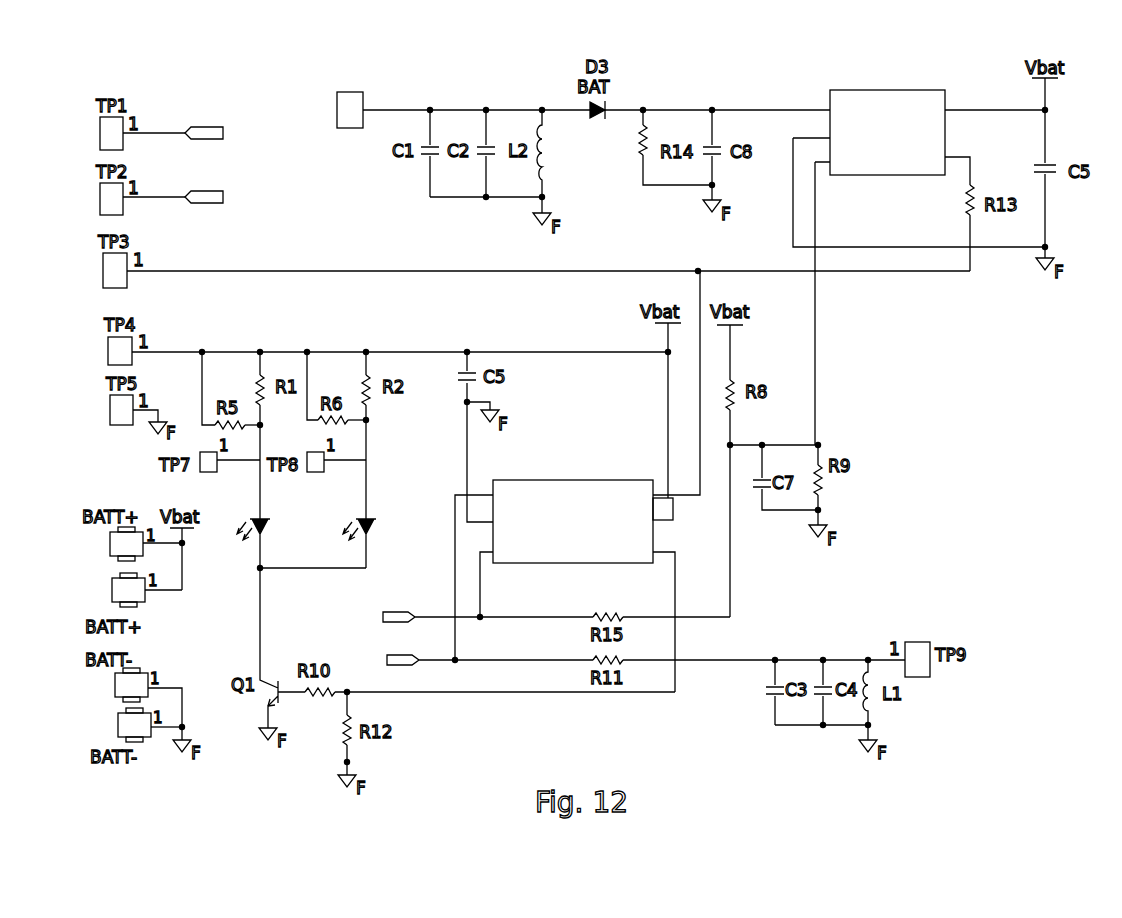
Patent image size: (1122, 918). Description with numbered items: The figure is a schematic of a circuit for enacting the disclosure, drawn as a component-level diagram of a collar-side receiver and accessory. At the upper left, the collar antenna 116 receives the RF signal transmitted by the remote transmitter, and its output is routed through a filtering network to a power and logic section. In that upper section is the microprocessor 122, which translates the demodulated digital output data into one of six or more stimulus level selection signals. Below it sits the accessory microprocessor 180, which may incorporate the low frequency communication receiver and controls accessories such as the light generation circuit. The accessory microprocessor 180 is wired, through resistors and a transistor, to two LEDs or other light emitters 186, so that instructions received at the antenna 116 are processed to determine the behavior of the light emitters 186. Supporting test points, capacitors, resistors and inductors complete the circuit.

The collar antenna 116 is at (337, 108).
The microprocessor 122 is at (893, 90).
The accessory microprocessor 180 is at (561, 480).
The LED or other light emitter 186 is at (257, 523).